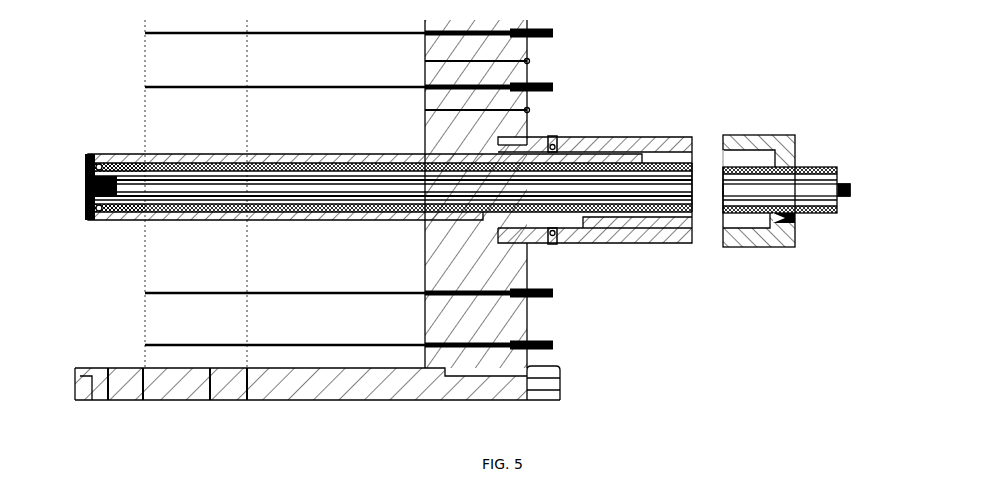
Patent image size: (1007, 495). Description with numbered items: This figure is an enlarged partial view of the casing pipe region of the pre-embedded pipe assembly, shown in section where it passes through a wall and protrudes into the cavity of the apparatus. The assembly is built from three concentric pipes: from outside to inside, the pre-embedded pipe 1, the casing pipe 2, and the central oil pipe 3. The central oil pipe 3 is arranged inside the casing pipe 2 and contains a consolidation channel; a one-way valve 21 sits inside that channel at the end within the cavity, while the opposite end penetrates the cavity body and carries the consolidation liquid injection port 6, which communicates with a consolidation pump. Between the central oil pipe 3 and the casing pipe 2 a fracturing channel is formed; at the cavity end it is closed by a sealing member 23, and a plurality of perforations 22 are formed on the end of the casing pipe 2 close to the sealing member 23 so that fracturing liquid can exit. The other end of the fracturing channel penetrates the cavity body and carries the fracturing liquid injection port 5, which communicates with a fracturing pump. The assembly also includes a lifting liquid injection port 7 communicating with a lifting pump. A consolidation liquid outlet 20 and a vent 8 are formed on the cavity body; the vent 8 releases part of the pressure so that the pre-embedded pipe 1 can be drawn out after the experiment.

The pre-embedded pipe 1 is at (595, 151).
The casing pipe 2 is at (396, 205).
The central oil pipe 3 is at (589, 218).
The consolidation liquid outlet 20 is at (624, 282).
The one-way valve 21 is at (390, 141).
The perforation 22 is at (390, 240).
The sealing member 23 is at (115, 160).
The fracturing liquid injection port 5 is at (821, 151).
The consolidation liquid injection port 6 is at (814, 173).
The lifting liquid injection port 7 is at (811, 204).
The vent 8 is at (809, 251).